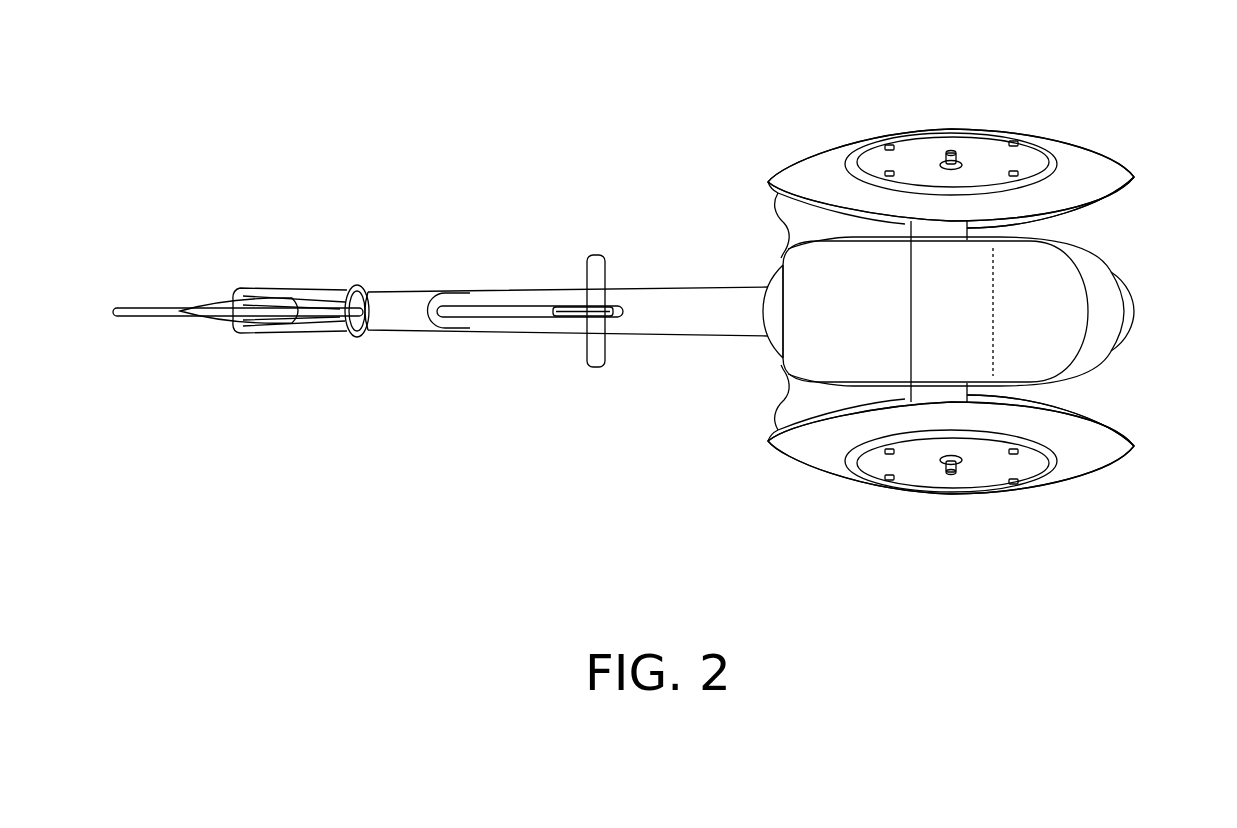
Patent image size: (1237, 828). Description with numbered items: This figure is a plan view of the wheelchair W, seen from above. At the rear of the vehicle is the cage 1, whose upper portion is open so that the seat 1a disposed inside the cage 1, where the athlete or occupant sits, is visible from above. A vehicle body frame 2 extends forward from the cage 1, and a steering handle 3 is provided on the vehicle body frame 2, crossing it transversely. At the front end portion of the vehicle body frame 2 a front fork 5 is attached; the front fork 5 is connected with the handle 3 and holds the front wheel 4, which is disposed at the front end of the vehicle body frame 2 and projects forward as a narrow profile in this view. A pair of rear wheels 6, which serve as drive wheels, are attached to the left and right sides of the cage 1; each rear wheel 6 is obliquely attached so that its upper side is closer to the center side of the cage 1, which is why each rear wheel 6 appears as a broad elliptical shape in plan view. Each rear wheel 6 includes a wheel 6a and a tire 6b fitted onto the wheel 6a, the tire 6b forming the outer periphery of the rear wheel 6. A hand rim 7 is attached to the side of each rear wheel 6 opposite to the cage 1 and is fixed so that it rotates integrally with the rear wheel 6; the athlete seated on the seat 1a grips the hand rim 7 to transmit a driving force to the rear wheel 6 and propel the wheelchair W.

The cage 1 is at (1098, 350).
The seat 1a is at (1070, 270).
The vehicle body frame 2 is at (706, 292).
The steering handle 3 is at (598, 254).
The front wheel 4 is at (151, 301).
The front fork 5 is at (283, 290).
The rear wheel 6 is at (1073, 120).
The wheel 6a is at (1104, 168).
The tire 6b is at (1134, 178).
The hand rim 7 is at (853, 152).
The wheelchair W is at (1168, 155).